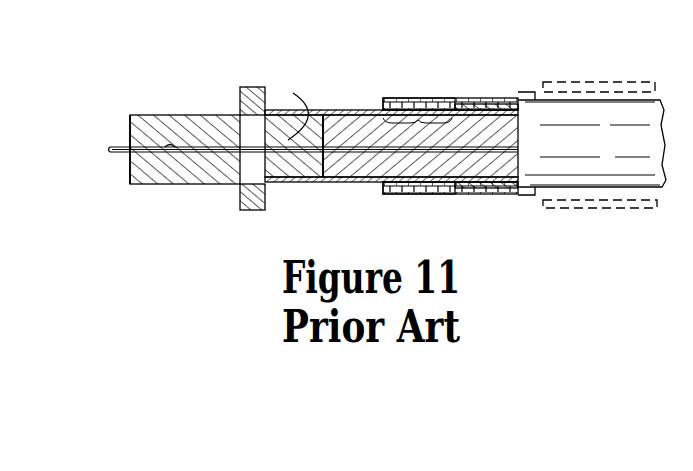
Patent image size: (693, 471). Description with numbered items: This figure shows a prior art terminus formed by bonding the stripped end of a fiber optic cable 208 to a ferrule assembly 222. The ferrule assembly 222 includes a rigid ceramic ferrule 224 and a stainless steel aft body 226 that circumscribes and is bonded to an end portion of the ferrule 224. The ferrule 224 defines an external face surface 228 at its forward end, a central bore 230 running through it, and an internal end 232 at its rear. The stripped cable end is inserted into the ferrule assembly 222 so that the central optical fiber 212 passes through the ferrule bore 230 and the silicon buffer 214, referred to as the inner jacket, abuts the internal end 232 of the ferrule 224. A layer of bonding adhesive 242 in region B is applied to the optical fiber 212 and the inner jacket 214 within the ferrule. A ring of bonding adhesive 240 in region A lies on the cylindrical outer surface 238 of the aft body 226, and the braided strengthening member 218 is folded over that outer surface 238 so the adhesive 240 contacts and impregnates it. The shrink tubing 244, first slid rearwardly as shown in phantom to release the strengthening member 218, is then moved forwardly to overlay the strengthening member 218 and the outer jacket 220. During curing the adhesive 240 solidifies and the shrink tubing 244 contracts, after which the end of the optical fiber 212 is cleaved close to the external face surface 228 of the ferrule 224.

The fiber optic cable 208 is at (567, 109).
The optical fiber 212 is at (128, 147).
The silicon buffer 214 is at (352, 178).
The strengthening member 218 is at (435, 194).
The outer jacket 220 is at (490, 190).
The ferrule assembly 222 is at (216, 54).
The rigid ferrule 224 is at (190, 125).
The aft body 226 is at (335, 112).
The external face surface 228 is at (130, 172).
The central bore 230 is at (176, 153).
The internal end 232 is at (297, 178).
The cylindrical outer surface 238 is at (395, 99).
The bonding adhesive 240 is at (410, 100).
The bonding adhesive layer 242 is at (290, 107).
The shrink tubing 244 is at (540, 80).